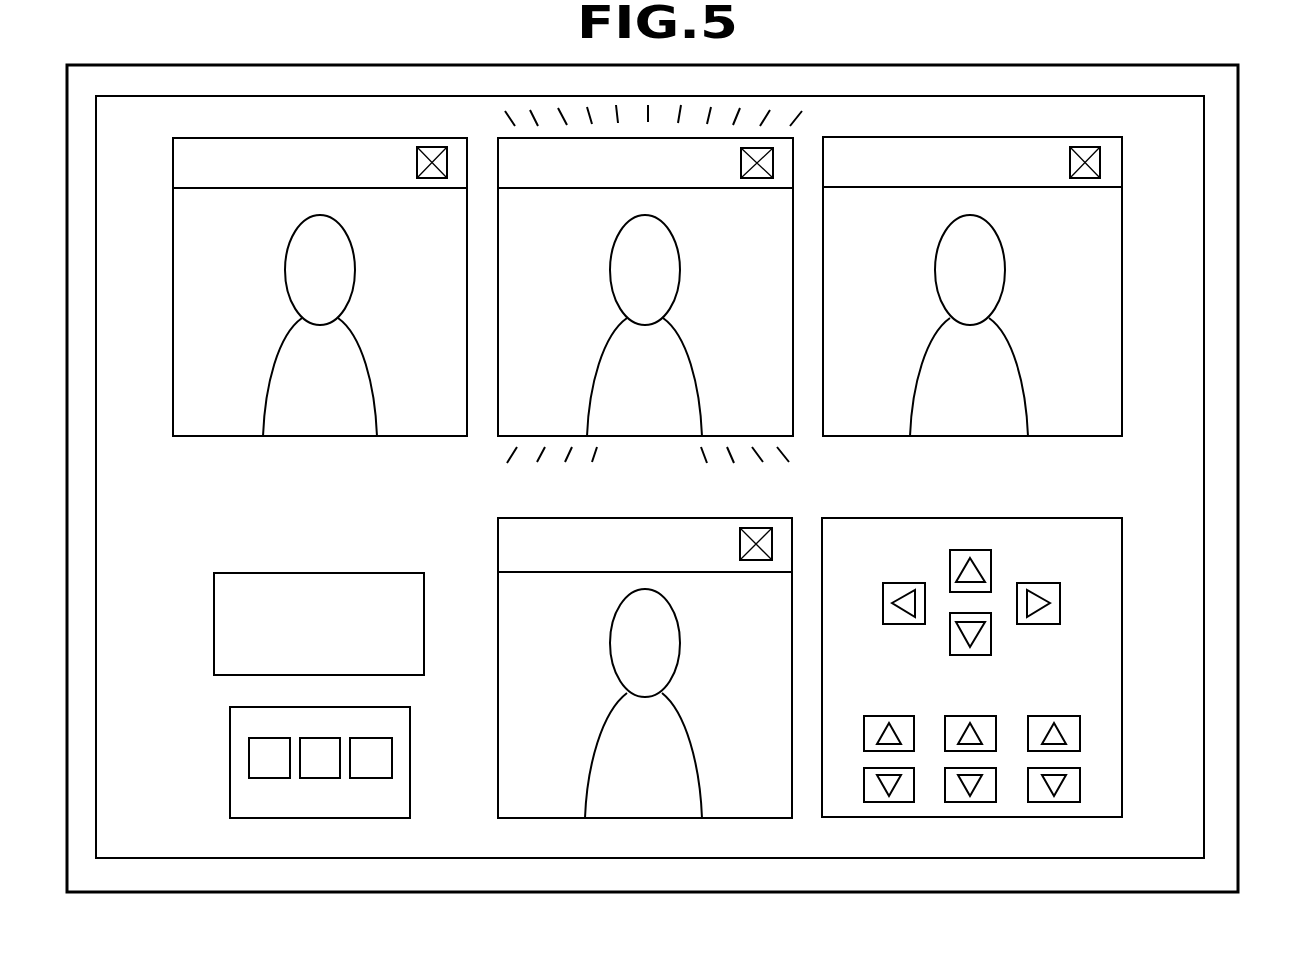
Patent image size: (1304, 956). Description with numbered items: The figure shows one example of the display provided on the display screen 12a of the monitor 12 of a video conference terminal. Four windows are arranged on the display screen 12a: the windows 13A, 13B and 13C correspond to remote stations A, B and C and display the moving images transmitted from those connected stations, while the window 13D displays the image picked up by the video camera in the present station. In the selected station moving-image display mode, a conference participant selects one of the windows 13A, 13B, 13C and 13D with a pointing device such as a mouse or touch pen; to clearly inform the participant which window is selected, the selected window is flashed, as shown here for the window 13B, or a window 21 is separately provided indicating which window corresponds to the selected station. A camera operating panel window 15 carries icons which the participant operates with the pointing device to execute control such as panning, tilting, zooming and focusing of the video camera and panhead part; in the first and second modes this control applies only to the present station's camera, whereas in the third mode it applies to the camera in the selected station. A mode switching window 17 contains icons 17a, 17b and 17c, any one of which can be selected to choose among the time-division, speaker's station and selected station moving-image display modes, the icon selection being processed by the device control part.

The monitor 12 is at (1240, 457).
The display screen 12a is at (1207, 529).
The window 13A is at (190, 437).
The window 13B is at (498, 437).
The window 13C is at (823, 437).
The window 13D is at (498, 788).
The camera operating panel window 15 is at (1122, 790).
The mode switching window 17 is at (282, 778).
The icon 17a is at (265, 778).
The icon 17b is at (323, 778).
The icon 17c is at (377, 778).
The window 21 is at (214, 595).